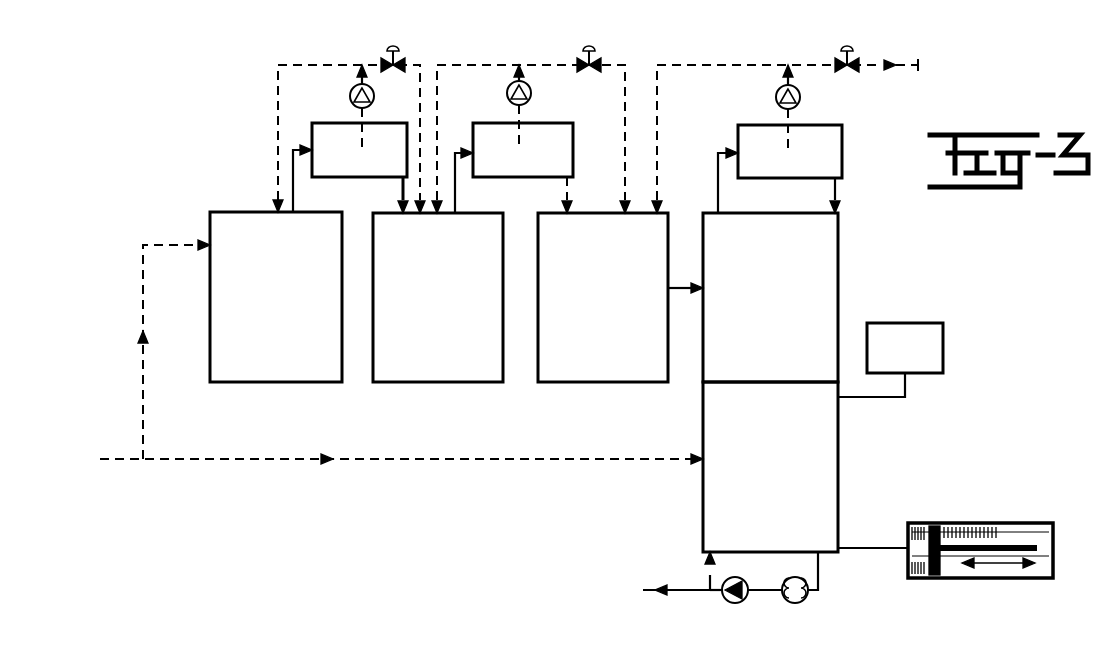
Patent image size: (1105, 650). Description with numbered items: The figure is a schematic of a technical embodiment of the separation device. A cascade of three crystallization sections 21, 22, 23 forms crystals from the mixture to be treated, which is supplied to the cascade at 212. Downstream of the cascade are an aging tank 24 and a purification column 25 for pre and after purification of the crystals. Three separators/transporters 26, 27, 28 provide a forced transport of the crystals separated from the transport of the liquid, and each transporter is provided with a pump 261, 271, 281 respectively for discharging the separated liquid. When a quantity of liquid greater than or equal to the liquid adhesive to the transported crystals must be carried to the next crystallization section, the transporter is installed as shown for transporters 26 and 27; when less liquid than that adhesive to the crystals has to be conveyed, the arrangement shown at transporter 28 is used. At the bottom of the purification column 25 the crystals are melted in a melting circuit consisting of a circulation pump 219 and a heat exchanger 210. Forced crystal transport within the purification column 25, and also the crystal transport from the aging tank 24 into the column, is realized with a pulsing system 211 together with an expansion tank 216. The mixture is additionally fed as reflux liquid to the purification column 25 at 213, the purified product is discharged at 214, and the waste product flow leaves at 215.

The crystallization section 21 is at (276, 297).
The crystallization section 22 is at (438, 297).
The crystallization section 23 is at (603, 297).
The aging tank 24 is at (770, 297).
The purification column 25 is at (770, 467).
The separator/transporter 26 is at (330, 134).
The separator/transporter 27 is at (544, 134).
The separator/transporter 28 is at (814, 134).
The pump 261 is at (374, 96).
The pump 271 is at (507, 96).
The pump 281 is at (776, 97).
The heat exchanger 210 is at (795, 603).
The pulsing system 211 is at (986, 534).
The mixture supply 212 is at (143, 285).
The reflux liquid supply 213 is at (583, 467).
The purified product discharge 214 is at (653, 590).
The waste product discharge 215 is at (917, 60).
The expansion tank 216 is at (904, 335).
The circulation pump 219 is at (735, 603).